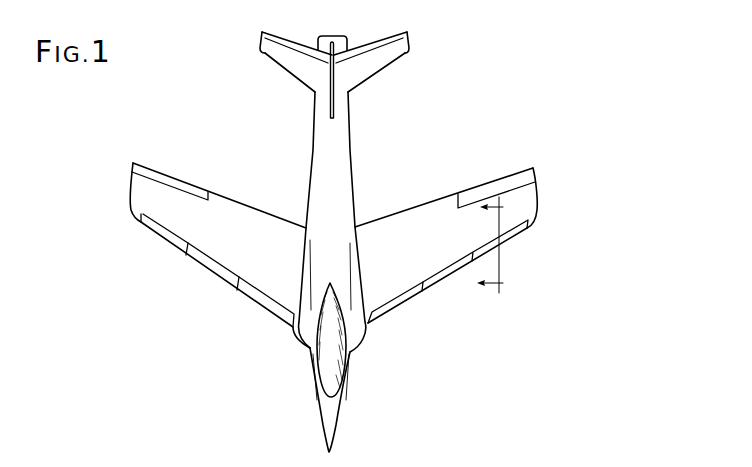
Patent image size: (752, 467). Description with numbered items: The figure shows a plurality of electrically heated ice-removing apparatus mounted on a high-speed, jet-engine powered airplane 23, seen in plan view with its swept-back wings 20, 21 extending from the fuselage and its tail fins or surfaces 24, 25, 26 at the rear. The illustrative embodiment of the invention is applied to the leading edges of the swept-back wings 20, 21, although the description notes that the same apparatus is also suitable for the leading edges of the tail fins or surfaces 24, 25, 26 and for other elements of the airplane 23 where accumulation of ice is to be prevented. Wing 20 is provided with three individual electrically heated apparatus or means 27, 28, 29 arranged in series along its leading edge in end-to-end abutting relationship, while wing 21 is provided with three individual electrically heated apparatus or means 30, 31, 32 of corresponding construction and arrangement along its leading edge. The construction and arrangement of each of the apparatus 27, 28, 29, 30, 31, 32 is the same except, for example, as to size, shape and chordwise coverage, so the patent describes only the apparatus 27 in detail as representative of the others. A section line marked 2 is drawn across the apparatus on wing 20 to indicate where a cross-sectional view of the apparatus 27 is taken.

The section line 2- 2 is at (499, 247).
The swept-back wing 20 is at (418, 217).
The swept-back wing 21 is at (252, 216).
The airplane 23 is at (355, 368).
The tail fin or surface 24 is at (387, 58).
The tail fin or surface 25 is at (273, 52).
The tail fin or surface 26 is at (331, 105).
The electrically heated apparatus 27 is at (515, 237).
The electrically heated apparatus 28 is at (442, 284).
The electrically heated apparatus 29 is at (394, 313).
The electrically heated apparatus 30 is at (145, 226).
The electrically heated apparatus 31 is at (205, 273).
The electrically heated apparatus 32 is at (260, 309).